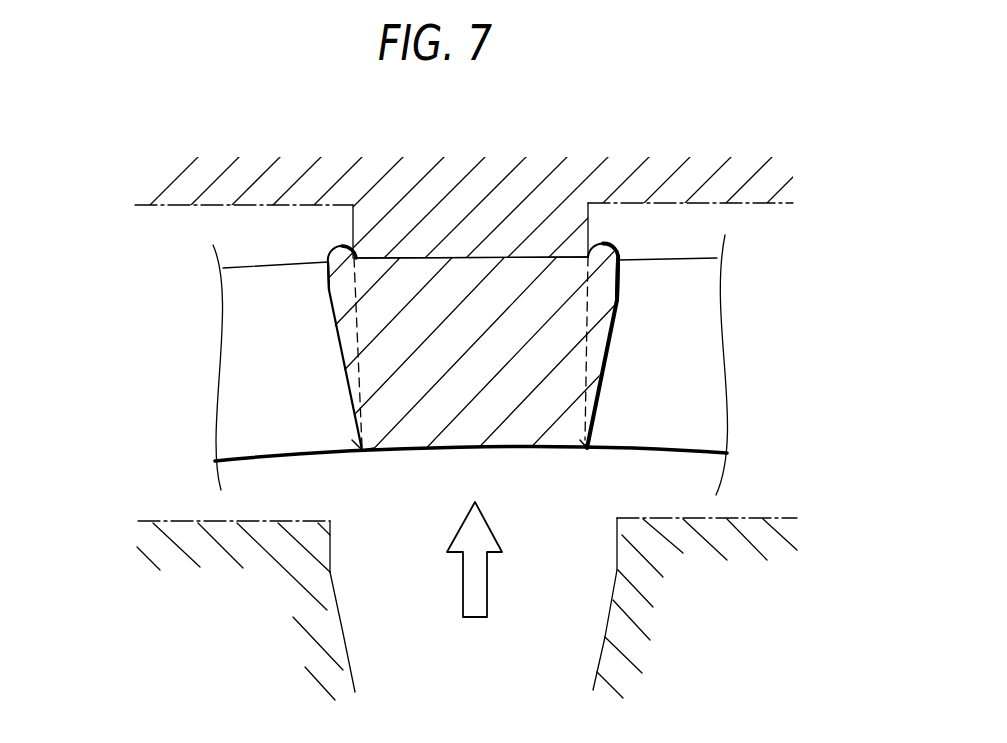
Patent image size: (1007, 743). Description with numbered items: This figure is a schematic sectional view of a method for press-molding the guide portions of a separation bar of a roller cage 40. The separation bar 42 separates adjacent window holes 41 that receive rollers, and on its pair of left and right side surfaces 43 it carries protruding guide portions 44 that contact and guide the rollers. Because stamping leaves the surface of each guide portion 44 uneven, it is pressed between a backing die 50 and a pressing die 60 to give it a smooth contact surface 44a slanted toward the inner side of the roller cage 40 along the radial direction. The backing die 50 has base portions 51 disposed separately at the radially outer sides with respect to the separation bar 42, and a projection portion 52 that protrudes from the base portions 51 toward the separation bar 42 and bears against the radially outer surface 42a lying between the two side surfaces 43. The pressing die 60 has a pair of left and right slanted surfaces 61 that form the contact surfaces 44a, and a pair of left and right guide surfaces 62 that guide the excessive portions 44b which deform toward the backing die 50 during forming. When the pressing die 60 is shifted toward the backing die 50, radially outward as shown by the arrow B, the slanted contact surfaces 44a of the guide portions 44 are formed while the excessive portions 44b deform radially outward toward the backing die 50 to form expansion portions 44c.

The roller cage 40 is at (793, 281).
The window hole 41 is at (285, 386).
The separation bar 42 is at (490, 371).
The surface of the separation bar 42a is at (525, 257).
The side surface 43 is at (357, 368).
The guide portion 44 is at (316, 320).
The contact surface 44a is at (357, 410).
The excessive portion 44b is at (328, 283).
The expansion portion 44c is at (341, 252).
The backing die 50 is at (172, 208).
The base portion 51 is at (720, 146).
The projection portion 52 is at (446, 237).
The pressing die 60 is at (172, 519).
The slanted surface 61 is at (345, 638).
The guide surface 62 is at (332, 542).
The arrow B is at (466, 607).